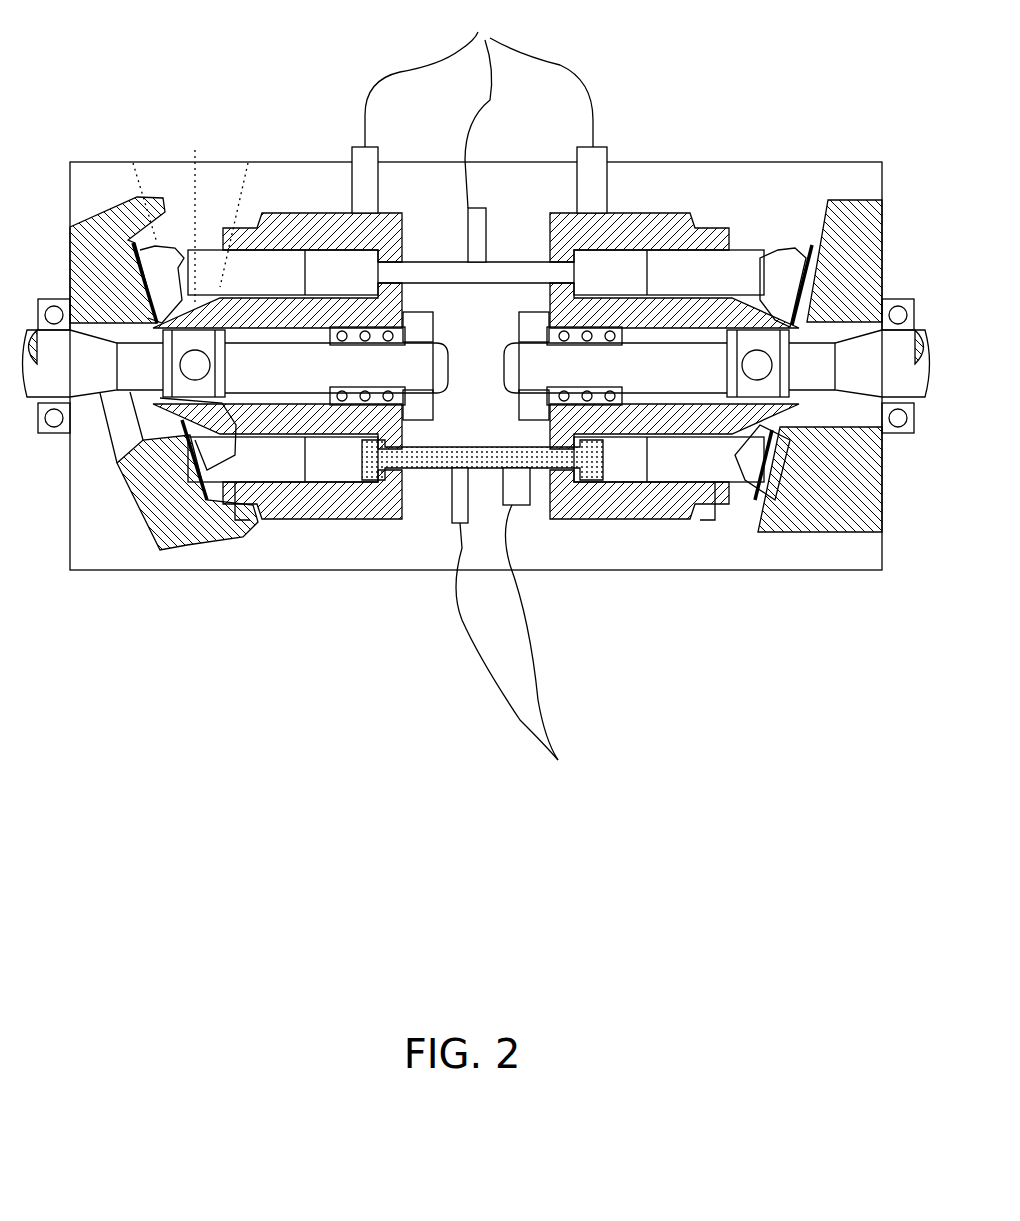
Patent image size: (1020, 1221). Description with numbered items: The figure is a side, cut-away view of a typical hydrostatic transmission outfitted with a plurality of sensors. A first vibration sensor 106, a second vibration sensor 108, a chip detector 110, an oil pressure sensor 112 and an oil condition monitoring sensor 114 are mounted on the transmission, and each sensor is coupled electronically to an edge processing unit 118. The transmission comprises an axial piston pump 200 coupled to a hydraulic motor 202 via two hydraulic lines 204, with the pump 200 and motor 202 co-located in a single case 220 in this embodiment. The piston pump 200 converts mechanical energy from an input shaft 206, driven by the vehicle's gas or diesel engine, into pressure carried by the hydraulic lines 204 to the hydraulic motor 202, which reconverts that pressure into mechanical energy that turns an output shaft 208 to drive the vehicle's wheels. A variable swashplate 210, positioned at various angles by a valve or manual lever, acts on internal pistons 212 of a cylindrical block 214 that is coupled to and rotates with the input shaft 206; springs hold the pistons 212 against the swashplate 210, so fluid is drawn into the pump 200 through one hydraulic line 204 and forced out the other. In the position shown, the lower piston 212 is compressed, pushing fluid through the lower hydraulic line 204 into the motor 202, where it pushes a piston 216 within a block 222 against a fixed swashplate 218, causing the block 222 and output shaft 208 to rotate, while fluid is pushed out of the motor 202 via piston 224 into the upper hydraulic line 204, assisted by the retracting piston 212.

The first vibration sensor 106 is at (402, 170).
The second vibration sensor 108 is at (550, 170).
The chip detector 110 is at (467, 248).
The oil pressure sensor 112 is at (448, 493).
The oil condition monitoring sensor 114 is at (533, 490).
The edge processing unit 118 is at (647, 877).
The axial piston pump 200 is at (257, 545).
The hydraulic motor 202 is at (718, 552).
The hydraulic lines 204 is at (475, 447).
The input shaft 206 is at (32, 403).
The output shaft 208 is at (923, 400).
The variable swashplate 210 is at (183, 550).
The internal pistons 212 is at (288, 262).
The cylindrical block 214 is at (348, 520).
The piston 216 is at (675, 465).
The fixed swashplate 218 is at (852, 195).
The case 220 is at (406, 570).
The block 222 is at (660, 227).
The piston 224 is at (711, 267).